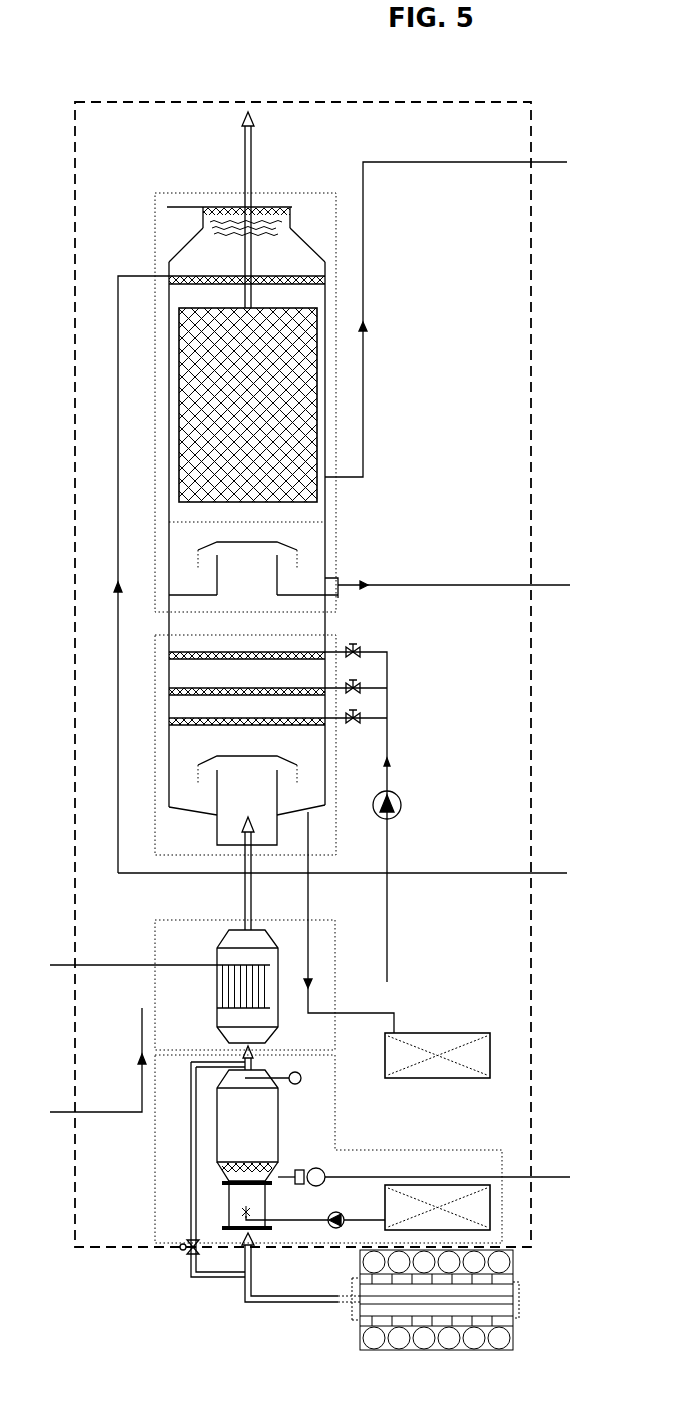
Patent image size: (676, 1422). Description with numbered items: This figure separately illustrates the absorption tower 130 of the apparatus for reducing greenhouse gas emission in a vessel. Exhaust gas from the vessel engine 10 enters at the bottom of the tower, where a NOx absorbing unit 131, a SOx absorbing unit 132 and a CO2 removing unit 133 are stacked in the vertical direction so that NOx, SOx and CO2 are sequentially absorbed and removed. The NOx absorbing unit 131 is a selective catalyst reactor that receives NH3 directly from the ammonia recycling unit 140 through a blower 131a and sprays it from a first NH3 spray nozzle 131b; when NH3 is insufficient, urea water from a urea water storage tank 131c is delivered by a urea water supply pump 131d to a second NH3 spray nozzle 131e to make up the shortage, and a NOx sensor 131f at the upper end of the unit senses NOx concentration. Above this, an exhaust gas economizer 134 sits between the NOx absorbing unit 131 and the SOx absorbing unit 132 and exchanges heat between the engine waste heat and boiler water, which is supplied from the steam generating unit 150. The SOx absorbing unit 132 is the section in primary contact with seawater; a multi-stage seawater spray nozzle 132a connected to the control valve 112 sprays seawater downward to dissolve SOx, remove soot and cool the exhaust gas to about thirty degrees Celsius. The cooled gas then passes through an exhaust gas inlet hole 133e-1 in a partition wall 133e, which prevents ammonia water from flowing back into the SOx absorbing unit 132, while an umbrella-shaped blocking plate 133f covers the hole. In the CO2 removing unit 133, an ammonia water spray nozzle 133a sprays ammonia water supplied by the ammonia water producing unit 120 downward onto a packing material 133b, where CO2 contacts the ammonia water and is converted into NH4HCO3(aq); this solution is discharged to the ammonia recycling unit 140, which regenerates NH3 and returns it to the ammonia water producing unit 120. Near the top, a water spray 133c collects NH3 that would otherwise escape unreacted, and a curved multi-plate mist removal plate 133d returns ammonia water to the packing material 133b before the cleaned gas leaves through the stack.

The absorption tower 130 is at (243, 96).
The NOx absorbing unit 131 is at (312, 1187).
The blower 131a is at (302, 1169).
The first NH3 spray nozzle 131b is at (217, 1163).
The urea water storage tank 131c is at (437, 1131).
The urea water supply pump 131d is at (353, 1211).
The second NH3 spray nozzle 131e is at (240, 1212).
The NOx sensor 131f is at (280, 1089).
The SOx absorbing unit 132 is at (258, 834).
The multi-stage seawater spray nozzle 132a is at (247, 688).
The CO2 removing unit 133 is at (225, 492).
The ammonia water spray nozzle 133a is at (247, 272).
The packing material 133b is at (248, 405).
The water spray 133c is at (226, 209).
The mist removal plate 133d is at (203, 226).
The partition wall 133e is at (253, 576).
The exhaust gas inlet hole 133e-1 is at (246, 587).
The umbrella-shaped blocking plate 133f is at (247, 546).
The exhaust gas economizer 134 is at (228, 995).
The control valve 112 is at (383, 803).
The ammonia water producing unit 120 is at (612, 172).
The ammonia recycling unit 140 is at (612, 594).
The steam generating unit 150 is at (38, 975).
The vessel engine 10 is at (435, 1312).